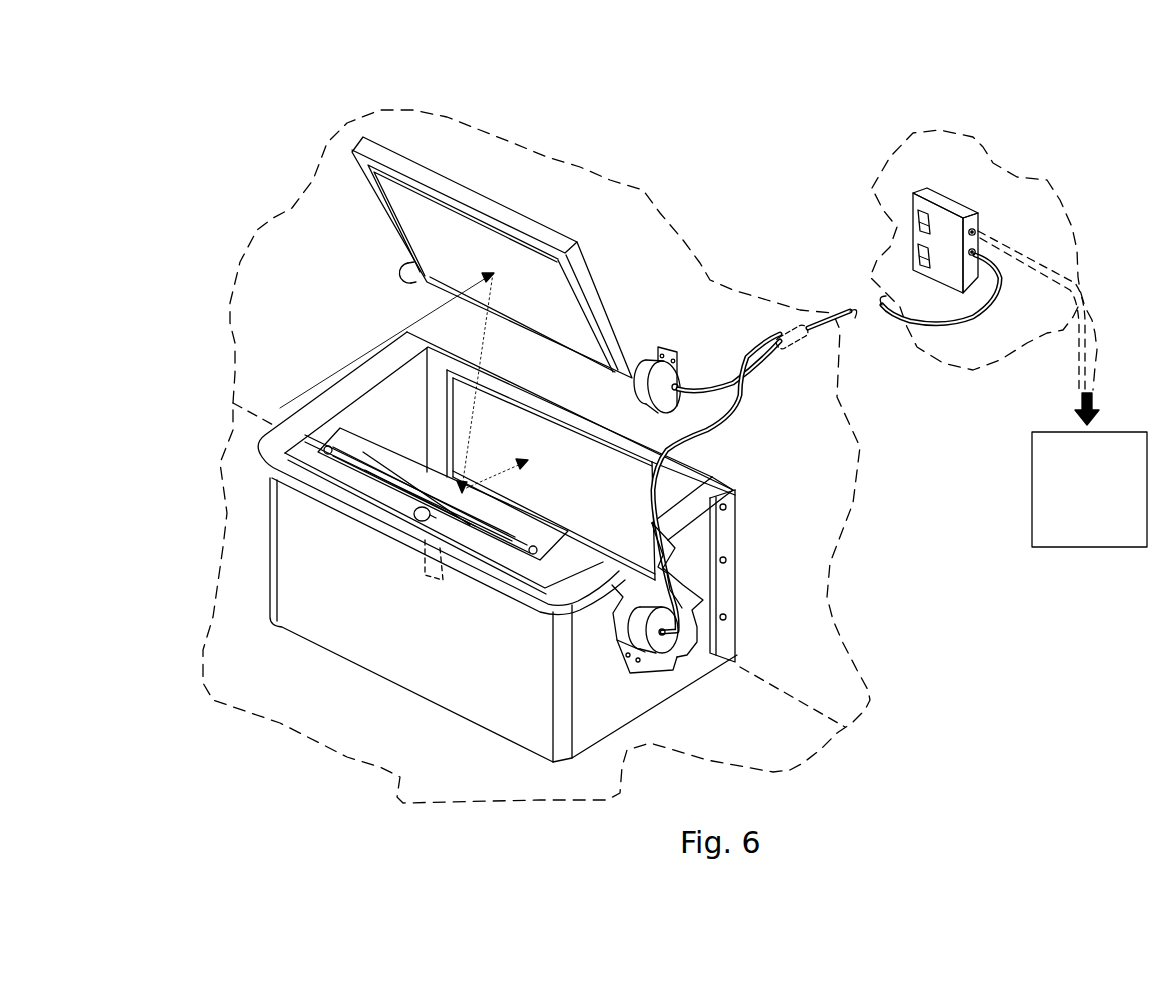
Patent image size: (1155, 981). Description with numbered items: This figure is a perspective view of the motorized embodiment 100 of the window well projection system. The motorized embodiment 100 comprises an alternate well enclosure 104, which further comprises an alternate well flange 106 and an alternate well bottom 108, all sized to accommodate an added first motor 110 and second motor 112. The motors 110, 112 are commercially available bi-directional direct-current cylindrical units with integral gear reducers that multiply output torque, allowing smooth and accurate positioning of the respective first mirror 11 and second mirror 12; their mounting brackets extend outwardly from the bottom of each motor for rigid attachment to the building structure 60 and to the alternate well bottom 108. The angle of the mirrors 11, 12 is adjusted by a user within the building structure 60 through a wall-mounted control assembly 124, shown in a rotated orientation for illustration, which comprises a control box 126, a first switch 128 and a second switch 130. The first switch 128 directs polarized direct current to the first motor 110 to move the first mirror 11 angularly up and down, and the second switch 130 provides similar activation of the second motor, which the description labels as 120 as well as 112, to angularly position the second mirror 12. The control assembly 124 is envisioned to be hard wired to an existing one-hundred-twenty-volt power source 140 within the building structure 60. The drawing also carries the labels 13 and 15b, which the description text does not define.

The motorized embodiment 100 is at (249, 150).
The building structure 60 is at (1012, 207).
The first mirror 11 is at (483, 207).
The hinge 15b is at (399, 271).
The alternate well flange 106 is at (498, 572).
The alternate well enclosure 104 is at (438, 688).
The panel 13 is at (630, 485).
The second mirror 12 is at (387, 472).
The first motor 110 is at (678, 384).
The second motor 120 is at (893, 312).
The control assembly 124 is at (866, 140).
The control box 126 is at (953, 215).
The first switch 128 is at (918, 215).
The second switch 130 is at (917, 262).
The 120-volt power source 140 is at (1093, 324).
The alternate well bottom 108 is at (643, 680).
The second motor 112 is at (663, 642).